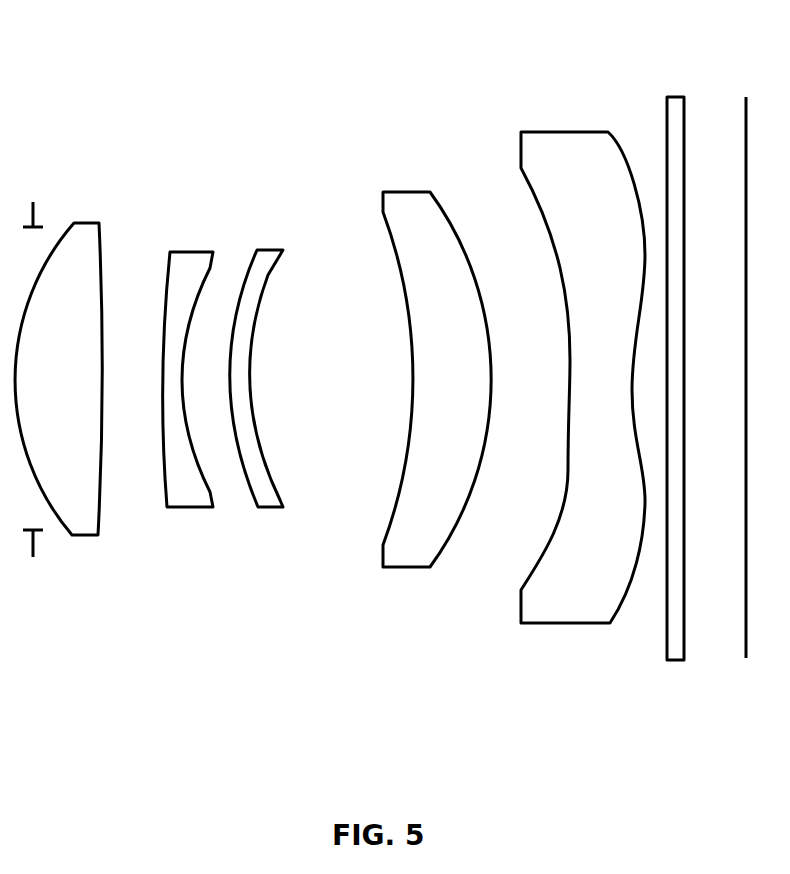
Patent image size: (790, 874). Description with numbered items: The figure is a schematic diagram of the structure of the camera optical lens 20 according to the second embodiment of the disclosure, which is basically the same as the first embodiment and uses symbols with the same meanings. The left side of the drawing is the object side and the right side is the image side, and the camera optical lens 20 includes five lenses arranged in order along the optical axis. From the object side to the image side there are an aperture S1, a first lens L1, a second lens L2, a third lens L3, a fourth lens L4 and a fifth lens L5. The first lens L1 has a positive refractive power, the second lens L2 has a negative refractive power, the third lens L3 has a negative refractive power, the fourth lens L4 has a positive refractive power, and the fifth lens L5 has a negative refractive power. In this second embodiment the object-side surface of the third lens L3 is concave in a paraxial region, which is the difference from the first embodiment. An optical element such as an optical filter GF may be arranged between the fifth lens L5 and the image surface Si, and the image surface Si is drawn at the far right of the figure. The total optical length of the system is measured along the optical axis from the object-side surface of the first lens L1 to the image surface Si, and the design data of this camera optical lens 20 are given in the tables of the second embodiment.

The camera optical lens 20 is at (376, 46).
The aperture S1 is at (34, 367).
The first lens L1 is at (58, 368).
The second lens L2 is at (188, 366).
The third lens L3 is at (256, 366).
The fourth lens L4 is at (437, 366).
The fifth lens L5 is at (583, 365).
The optical filter GF is at (675, 366).
The image surface Si is at (748, 365).